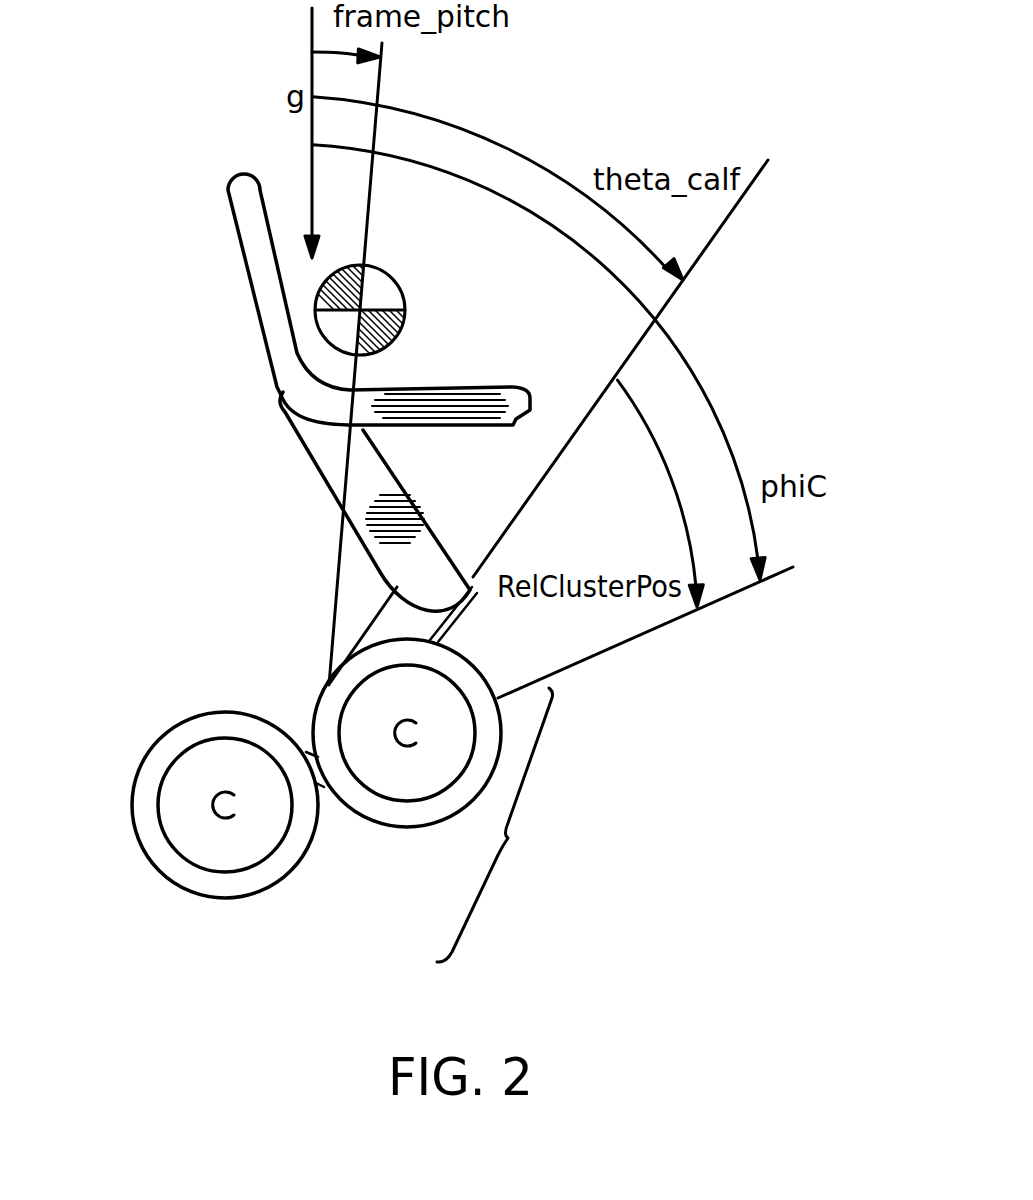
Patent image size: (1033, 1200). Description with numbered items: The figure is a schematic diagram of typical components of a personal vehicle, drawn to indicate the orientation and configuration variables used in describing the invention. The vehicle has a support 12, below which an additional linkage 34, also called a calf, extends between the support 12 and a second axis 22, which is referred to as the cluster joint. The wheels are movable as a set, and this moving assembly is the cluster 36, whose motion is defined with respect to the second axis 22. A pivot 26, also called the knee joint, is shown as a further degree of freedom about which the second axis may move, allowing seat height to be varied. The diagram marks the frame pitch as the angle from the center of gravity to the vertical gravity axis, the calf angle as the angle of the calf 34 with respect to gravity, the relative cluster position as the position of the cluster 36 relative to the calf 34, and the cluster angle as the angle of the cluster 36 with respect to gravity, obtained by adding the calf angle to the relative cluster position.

The support 12 is at (258, 332).
The second axis 22 is at (311, 756).
The pivot 26 is at (453, 557).
The linkage 34 is at (393, 617).
The cluster 36 is at (497, 825).